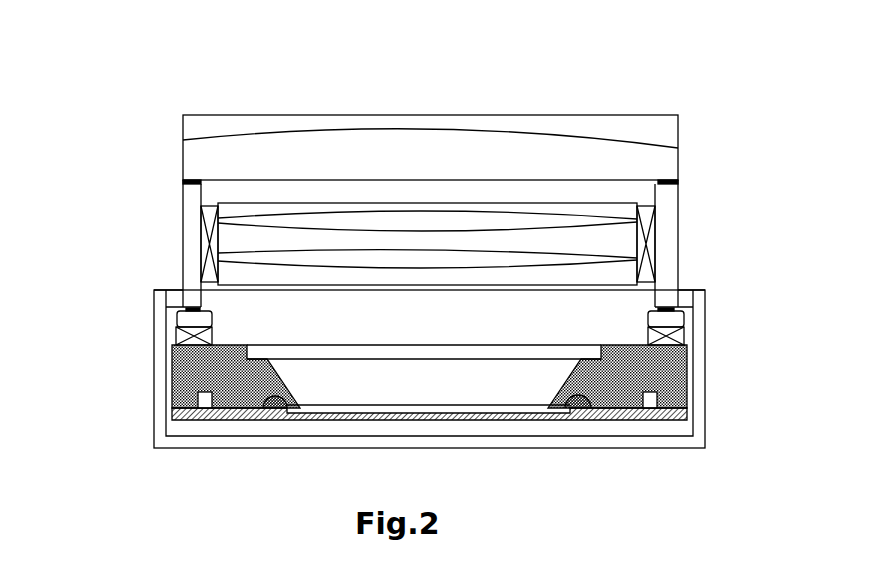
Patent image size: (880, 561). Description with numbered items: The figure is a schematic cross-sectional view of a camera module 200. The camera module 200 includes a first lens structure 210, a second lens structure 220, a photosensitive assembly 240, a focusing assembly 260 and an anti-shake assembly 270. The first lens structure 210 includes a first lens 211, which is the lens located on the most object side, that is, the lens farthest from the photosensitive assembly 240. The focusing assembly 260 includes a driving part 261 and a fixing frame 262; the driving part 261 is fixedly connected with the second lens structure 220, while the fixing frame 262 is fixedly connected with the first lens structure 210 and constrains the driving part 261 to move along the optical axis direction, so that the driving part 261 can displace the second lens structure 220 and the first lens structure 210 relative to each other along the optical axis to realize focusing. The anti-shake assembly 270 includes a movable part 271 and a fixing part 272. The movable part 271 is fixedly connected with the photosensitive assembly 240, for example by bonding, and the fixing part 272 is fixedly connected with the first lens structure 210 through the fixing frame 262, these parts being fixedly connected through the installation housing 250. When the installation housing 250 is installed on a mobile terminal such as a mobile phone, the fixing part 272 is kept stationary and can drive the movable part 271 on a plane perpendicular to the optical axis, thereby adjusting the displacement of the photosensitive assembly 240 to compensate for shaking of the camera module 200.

The camera module 200 is at (397, 52).
The first lens structure 210 is at (478, 124).
The first lens 211 is at (632, 132).
The second lens structure 220 is at (607, 197).
The photosensitive assembly 240 is at (692, 421).
The installation housing 250 is at (700, 346).
The focusing assembly 260 is at (360, 243).
The driving part 261 is at (203, 250).
The fixing frame 262 is at (195, 200).
The anti-shake assembly 270 is at (358, 321).
The movable part 271 is at (190, 343).
The fixing part 272 is at (190, 318).